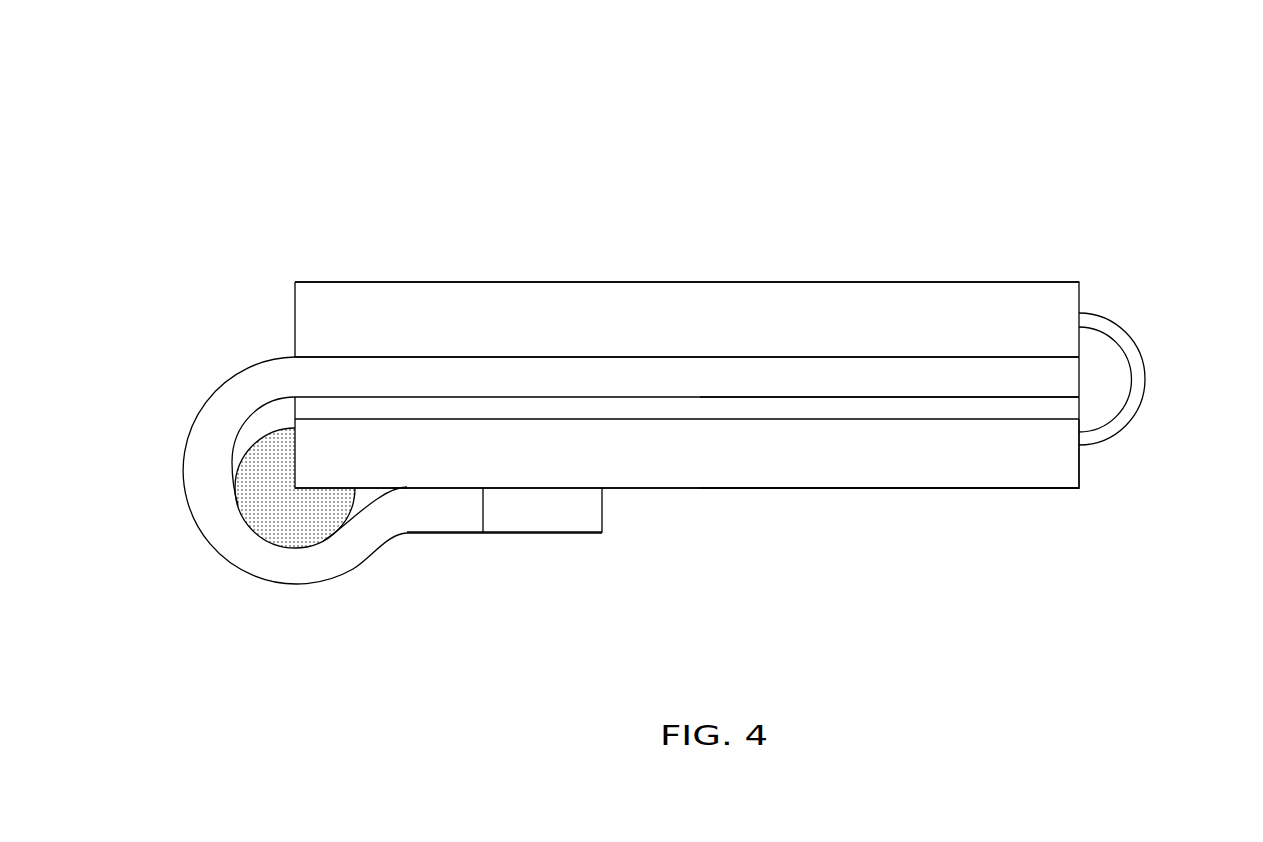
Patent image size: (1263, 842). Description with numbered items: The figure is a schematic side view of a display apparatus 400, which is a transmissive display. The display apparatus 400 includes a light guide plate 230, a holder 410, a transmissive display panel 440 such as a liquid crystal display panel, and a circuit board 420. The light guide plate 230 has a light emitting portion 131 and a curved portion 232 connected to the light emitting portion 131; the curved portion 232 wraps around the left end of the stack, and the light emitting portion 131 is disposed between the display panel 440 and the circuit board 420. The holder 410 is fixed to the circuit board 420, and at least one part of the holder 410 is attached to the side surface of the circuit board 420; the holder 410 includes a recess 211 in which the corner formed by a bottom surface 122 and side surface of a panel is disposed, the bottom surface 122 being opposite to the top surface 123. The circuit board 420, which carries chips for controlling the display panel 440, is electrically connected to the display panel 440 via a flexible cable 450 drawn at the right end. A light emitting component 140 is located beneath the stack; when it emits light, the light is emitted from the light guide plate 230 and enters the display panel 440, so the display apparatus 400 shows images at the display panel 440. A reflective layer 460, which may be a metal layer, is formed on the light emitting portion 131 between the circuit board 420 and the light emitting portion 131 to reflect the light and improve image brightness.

The display apparatus 400 is at (112, 76).
The light guide plate 230 is at (392, 334).
The curved portion 232 is at (222, 405).
The light emitting portion 131 is at (463, 375).
The recess 211 is at (338, 427).
The top surface 123 is at (948, 370).
The bottom surface 122 is at (954, 515).
The display panel 440 is at (1060, 296).
The flexible cable 450 is at (1138, 368).
The reflective layer 460 is at (1063, 407).
The circuit board 420 is at (1063, 463).
The light emitting component 140 is at (587, 506).
The holder 410 is at (260, 493).